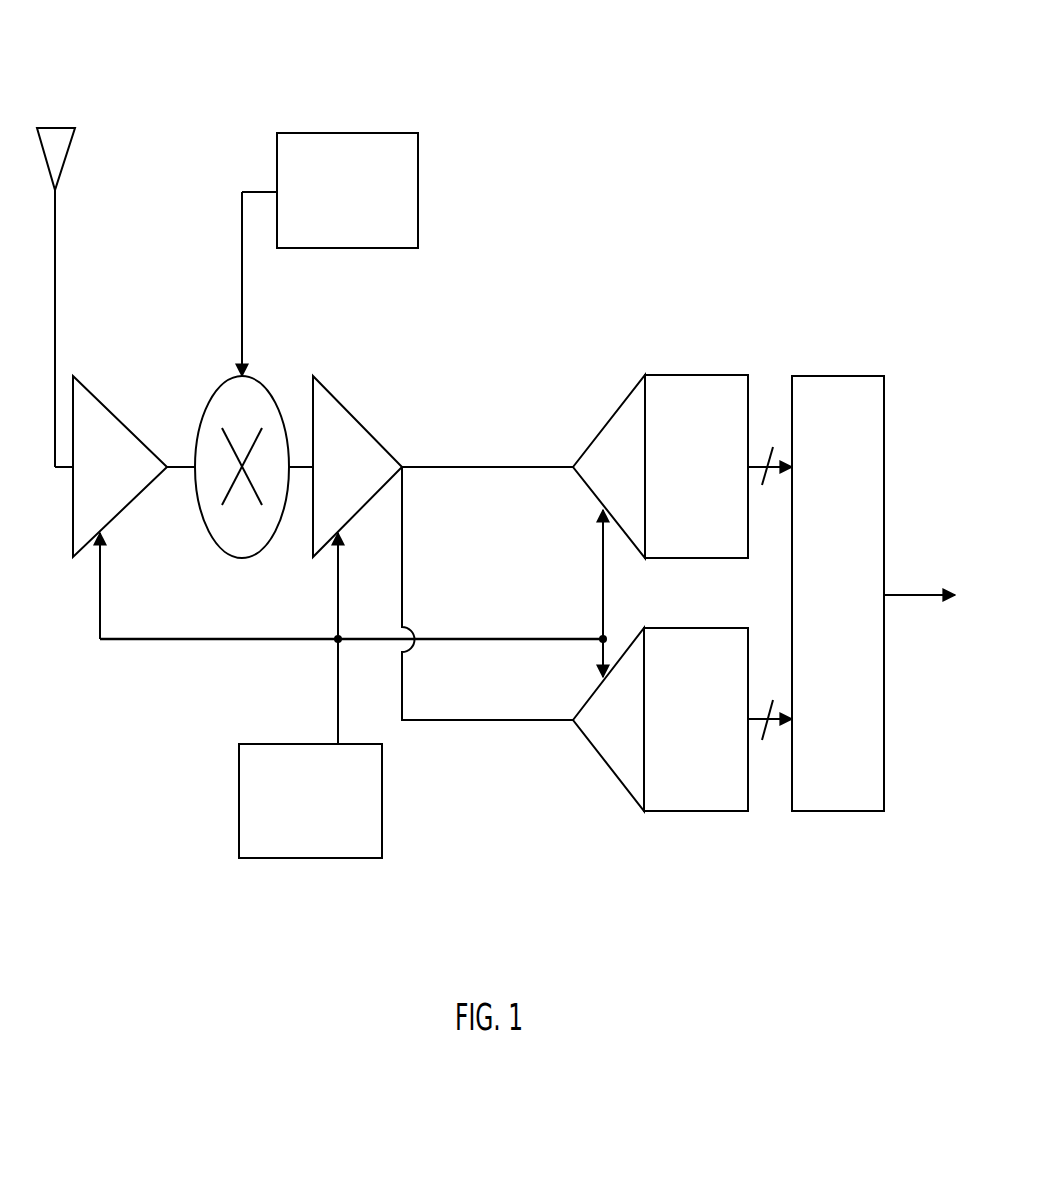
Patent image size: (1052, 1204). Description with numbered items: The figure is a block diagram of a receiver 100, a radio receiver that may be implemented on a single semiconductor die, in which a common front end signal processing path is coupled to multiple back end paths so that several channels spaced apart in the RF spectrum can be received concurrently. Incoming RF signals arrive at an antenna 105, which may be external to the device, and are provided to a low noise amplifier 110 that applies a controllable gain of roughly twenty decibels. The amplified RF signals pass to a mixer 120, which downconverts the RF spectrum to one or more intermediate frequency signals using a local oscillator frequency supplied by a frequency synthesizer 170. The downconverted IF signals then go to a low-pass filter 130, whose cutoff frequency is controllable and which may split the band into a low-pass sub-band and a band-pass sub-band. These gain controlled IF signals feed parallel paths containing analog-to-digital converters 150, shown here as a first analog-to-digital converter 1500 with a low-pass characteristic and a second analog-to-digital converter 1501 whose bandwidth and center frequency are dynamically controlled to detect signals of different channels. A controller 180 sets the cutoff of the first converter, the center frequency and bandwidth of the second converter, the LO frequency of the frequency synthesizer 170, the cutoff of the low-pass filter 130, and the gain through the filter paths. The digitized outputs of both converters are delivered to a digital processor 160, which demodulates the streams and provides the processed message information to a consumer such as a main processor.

The receiver 100 is at (75, 67).
The antenna 105 is at (63, 162).
The low noise amplifier 110 is at (118, 518).
The mixer 120 is at (262, 550).
The low-pass filter 130 is at (348, 523).
The analog-to-digital converters 150 is at (684, 605).
The analog-to-digital converter 1500 is at (647, 375).
The analog-to-digital converter 1501 is at (648, 813).
The digital processor 160 is at (833, 811).
The frequency synthesizer 170 is at (418, 192).
The controller 180 is at (382, 797).